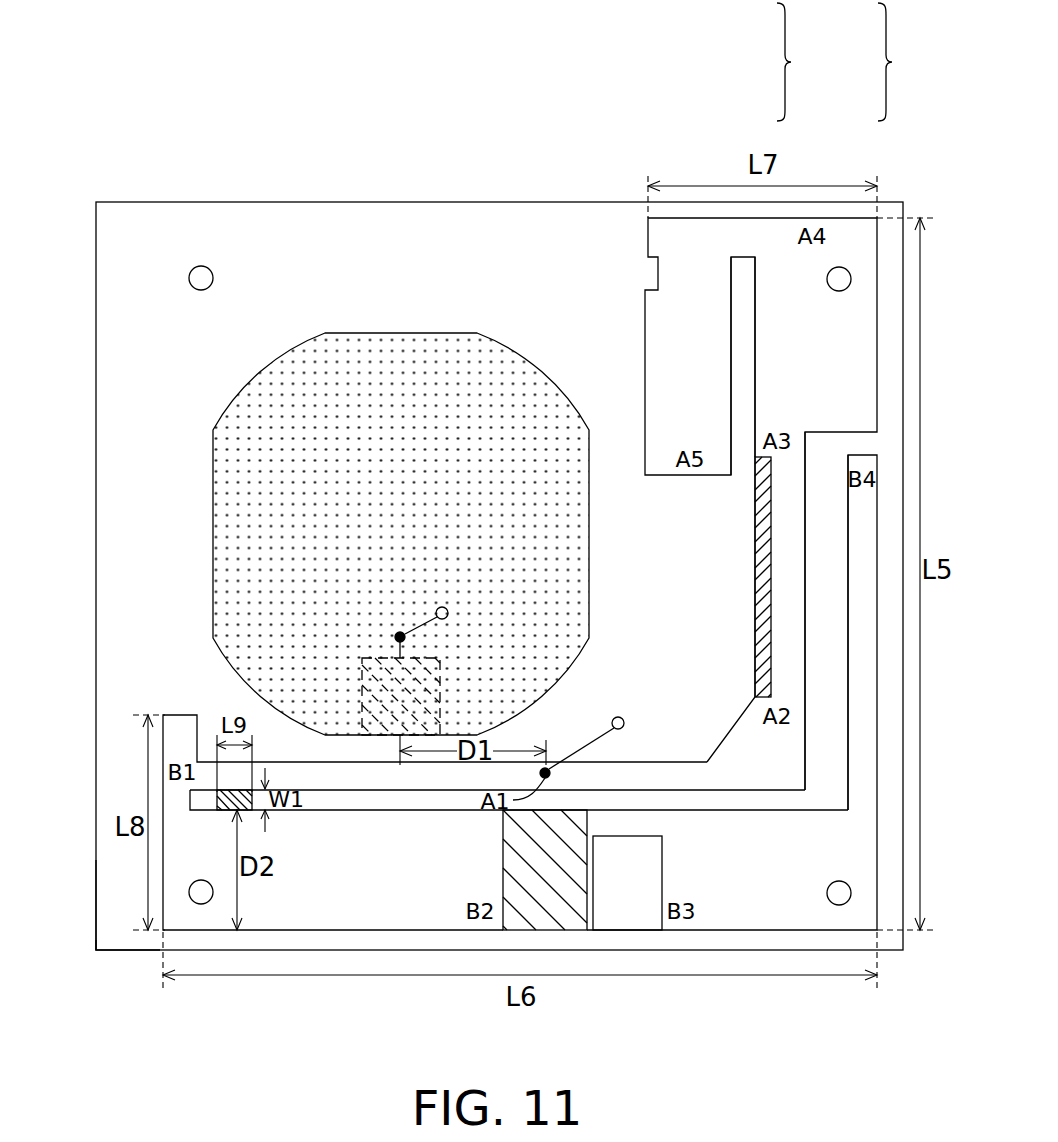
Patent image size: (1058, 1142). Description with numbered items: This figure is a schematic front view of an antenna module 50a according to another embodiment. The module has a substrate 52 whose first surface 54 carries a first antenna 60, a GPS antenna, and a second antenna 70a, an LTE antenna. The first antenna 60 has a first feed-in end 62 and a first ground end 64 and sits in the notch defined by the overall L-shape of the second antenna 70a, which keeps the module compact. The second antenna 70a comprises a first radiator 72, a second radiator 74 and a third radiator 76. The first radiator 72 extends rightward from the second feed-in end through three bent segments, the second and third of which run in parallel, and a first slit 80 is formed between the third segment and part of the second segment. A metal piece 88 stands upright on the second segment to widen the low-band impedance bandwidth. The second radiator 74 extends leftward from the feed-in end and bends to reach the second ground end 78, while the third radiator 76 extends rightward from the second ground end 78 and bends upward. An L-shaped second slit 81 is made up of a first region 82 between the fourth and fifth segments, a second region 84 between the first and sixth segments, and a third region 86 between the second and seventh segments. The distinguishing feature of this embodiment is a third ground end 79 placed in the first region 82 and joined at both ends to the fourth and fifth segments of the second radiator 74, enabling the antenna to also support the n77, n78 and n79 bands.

The antenna module 50a is at (107, 180).
The substrate 52 is at (67, 934).
The first surface 54 is at (110, 910).
The first antenna 60 is at (213, 533).
The first feed-in end 62 is at (396, 637).
The first ground end 64 is at (362, 702).
The second antenna 70a is at (892, 63).
The first radiator 72 is at (882, 342).
The second radiator 74 is at (303, 936).
The third radiator 76 is at (776, 936).
The second ground end 78 is at (572, 915).
The third ground end 79 is at (232, 812).
The first slit 80 is at (745, 436).
The second slit 81 is at (780, 63).
The first region 82 is at (430, 809).
The second region 84 is at (746, 809).
The third region 86 is at (824, 672).
The metal piece 88 is at (766, 557).